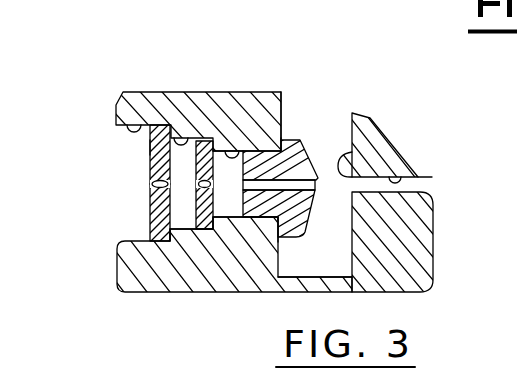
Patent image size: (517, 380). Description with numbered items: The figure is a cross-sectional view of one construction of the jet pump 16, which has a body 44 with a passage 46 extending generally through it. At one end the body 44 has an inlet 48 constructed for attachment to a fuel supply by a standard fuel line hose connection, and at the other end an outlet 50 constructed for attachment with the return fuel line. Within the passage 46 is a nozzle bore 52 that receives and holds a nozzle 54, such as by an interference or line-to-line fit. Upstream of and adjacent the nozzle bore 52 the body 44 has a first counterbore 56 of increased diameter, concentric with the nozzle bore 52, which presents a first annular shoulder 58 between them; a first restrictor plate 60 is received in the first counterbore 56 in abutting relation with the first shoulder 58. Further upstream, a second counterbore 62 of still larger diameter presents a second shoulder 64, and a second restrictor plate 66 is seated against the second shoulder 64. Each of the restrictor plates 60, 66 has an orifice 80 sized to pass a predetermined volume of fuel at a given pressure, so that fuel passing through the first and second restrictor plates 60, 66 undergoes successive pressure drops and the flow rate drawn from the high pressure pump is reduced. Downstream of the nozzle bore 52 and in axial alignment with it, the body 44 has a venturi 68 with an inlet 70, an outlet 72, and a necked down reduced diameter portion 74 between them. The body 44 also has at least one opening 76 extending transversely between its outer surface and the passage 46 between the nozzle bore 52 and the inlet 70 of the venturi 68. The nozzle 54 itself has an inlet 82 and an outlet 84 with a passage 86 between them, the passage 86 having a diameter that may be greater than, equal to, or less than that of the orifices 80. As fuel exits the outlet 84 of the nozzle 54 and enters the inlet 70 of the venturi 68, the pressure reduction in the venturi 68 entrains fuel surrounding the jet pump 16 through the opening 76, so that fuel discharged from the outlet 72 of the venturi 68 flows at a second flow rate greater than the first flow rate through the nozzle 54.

The jet pump 16 is at (335, 78).
The body 44 is at (232, 100).
The passage 46 is at (88, 178).
The inlet 48 is at (125, 238).
The outlet 50 is at (431, 193).
The nozzle bore 52 is at (245, 148).
The nozzle 54 is at (270, 222).
The first counterbore 56 is at (189, 138).
The first annular shoulder 58 is at (205, 141).
The first restrictor plate 60 is at (171, 243).
The second counterbore 62 is at (147, 130).
The second shoulder 64 is at (151, 124).
The second restrictor plate 66 is at (150, 148).
The venturi 68 is at (352, 196).
The inlet 70 is at (372, 124).
The outlet 72 is at (430, 177).
The reduced diameter portion 74 is at (413, 163).
The opening 76 is at (282, 106).
The orifice 80 is at (205, 183).
The inlet 82 is at (218, 230).
The outlet 84 is at (331, 178).
The passage 86 is at (290, 148).